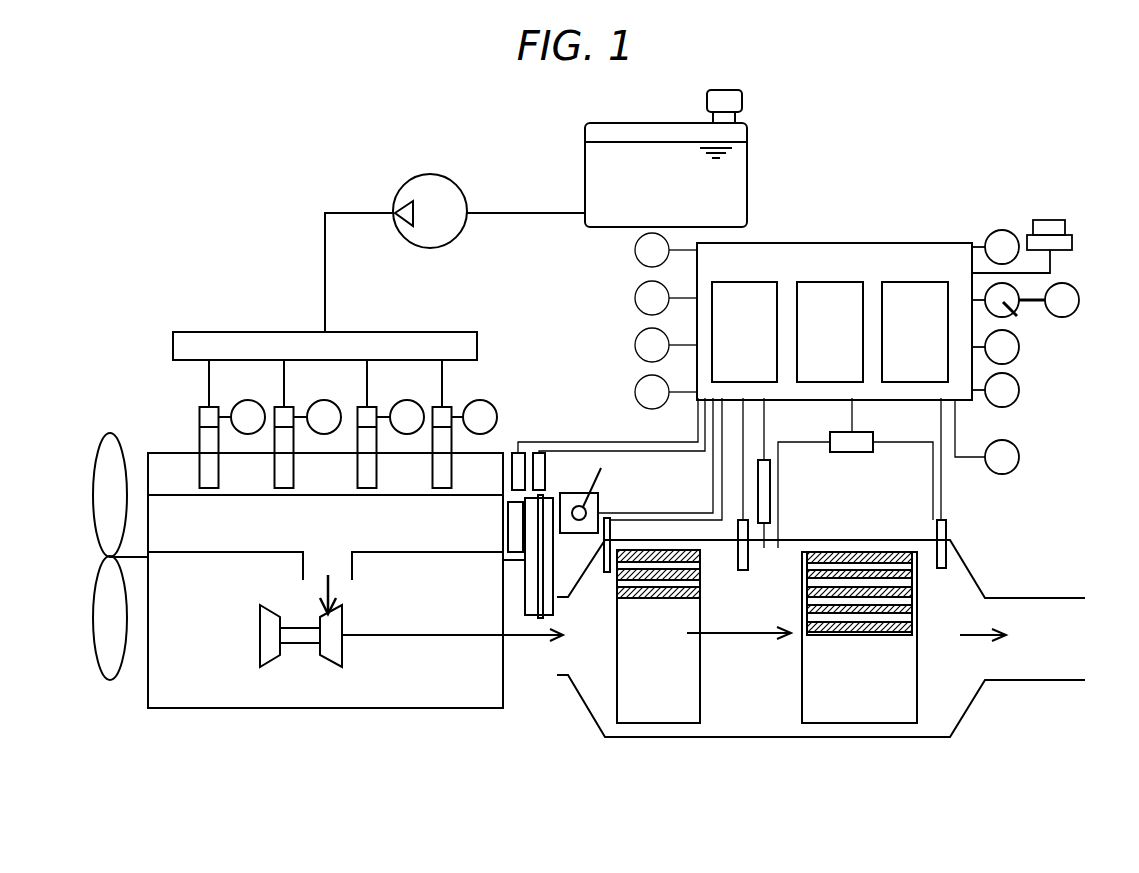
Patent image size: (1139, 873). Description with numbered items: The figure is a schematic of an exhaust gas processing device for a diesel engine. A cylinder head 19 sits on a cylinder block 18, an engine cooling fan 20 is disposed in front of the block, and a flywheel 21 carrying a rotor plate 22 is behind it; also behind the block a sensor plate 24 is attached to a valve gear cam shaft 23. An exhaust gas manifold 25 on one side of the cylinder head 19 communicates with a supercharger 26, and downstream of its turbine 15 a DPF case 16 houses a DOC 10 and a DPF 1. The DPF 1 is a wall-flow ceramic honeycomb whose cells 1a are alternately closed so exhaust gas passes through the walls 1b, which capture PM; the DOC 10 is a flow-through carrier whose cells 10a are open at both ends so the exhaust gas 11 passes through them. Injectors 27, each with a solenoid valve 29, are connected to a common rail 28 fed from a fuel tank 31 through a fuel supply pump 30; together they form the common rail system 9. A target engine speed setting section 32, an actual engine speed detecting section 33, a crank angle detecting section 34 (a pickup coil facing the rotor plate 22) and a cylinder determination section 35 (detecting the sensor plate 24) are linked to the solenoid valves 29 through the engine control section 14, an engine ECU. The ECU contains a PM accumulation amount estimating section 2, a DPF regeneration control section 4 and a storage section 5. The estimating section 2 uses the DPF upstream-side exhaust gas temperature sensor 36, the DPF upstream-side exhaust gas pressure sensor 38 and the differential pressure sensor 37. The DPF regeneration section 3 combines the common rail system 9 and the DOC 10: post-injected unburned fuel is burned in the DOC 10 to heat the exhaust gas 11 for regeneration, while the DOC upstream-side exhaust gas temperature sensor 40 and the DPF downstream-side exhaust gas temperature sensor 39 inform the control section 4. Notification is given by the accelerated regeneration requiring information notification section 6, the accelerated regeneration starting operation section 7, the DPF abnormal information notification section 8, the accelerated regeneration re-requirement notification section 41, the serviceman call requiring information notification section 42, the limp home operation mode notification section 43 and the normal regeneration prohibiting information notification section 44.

The DPF 1 is at (859, 672).
The cells 1a is at (870, 612).
The walls 1b is at (838, 600).
The PM accumulation amount estimating section 2 is at (740, 290).
The DPF regeneration section 3 is at (767, 671).
The DPF regeneration control section 4 is at (822, 290).
The storage section 5 is at (910, 292).
The accelerated regeneration requiring information notification section 6 is at (993, 232).
The accelerated regeneration starting operation section 7 is at (1045, 218).
The DPF abnormal information notification section 8 is at (1012, 460).
The common rail system 9 is at (341, 413).
The DOC 10 is at (658, 669).
The cells 10a is at (665, 582).
The exhaust gas 11 is at (515, 645).
The engine control section 14 is at (803, 292).
The turbine 15 is at (345, 655).
The DPF case 16 is at (775, 740).
The cylinder block 18 is at (470, 712).
The cylinder head 19 is at (519, 450).
The engine cooling fan 20 is at (106, 455).
The flywheel 21 is at (555, 612).
The rotor plate 22 is at (516, 564).
The valve gear cam shaft 23 is at (508, 520).
The sensor plate 24 is at (525, 560).
The exhaust gas manifold 25 is at (197, 556).
The supercharger 26 is at (308, 650).
The injectors 27 is at (275, 491).
The common rail 28 is at (255, 345).
The solenoid valve 29 is at (320, 413).
The fuel supply pump 30 is at (443, 196).
The fuel tank 31 is at (742, 132).
The target engine speed setting section 32 is at (600, 500).
The actual engine speed detecting section 33 is at (619, 444).
The crank angle detecting section 34 is at (530, 452).
The cylinder determination section 35 is at (617, 429).
The DPF upstream-side exhaust gas temperature sensor 36 is at (743, 572).
The differential pressure sensor 37 is at (862, 450).
The DPF upstream-side exhaust gas pressure sensor 38 is at (772, 490).
The DPF downstream-side exhaust gas temperature sensor 39 is at (943, 570).
The DOC upstream-side exhaust gas temperature sensor 40 is at (606, 575).
The accelerated regeneration re-requirement notification section 41 is at (1009, 310).
The serviceman call requiring information notification section 42 is at (1012, 347).
The limp home operation mode notification section 43 is at (1012, 390).
The normal regeneration prohibiting information notification section 44 is at (1080, 300).